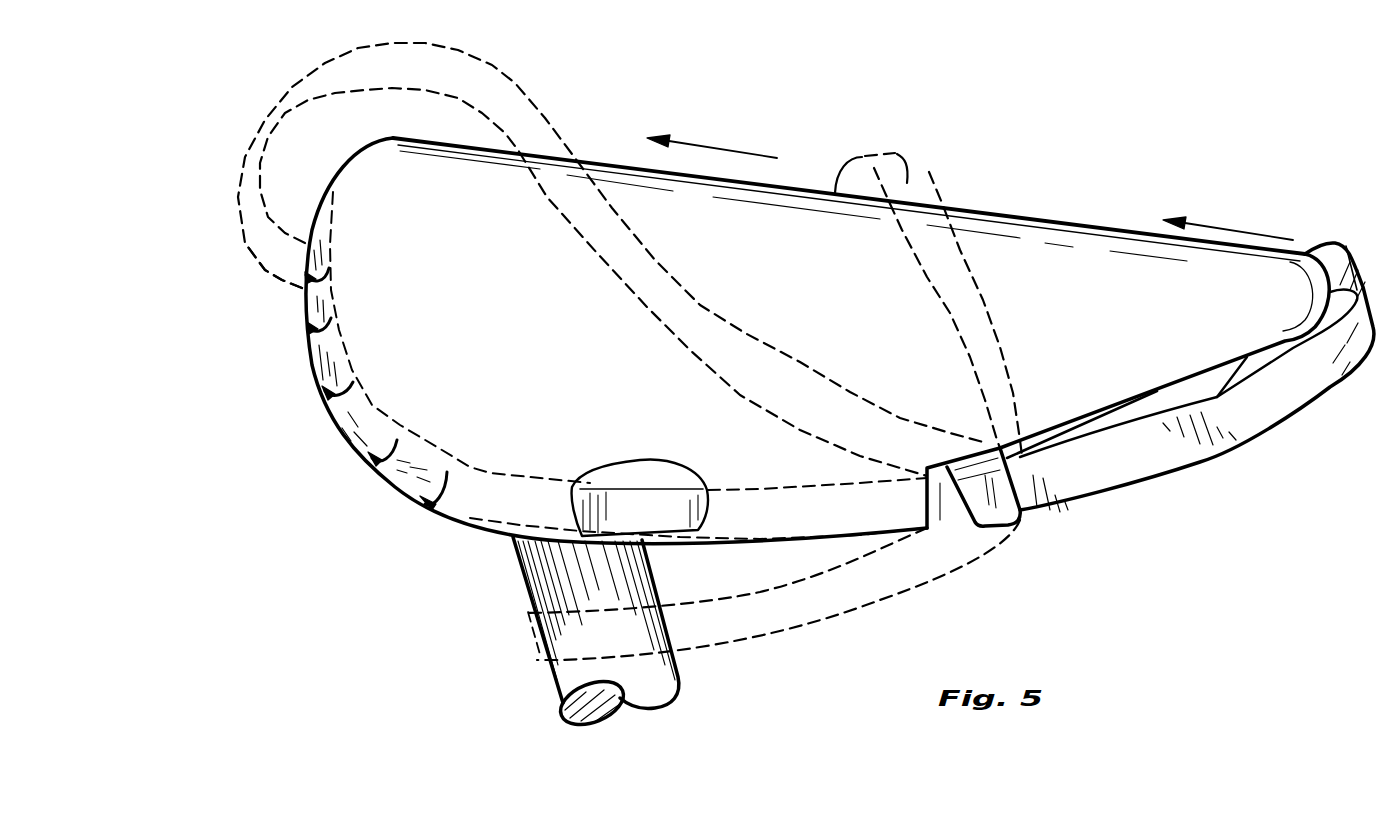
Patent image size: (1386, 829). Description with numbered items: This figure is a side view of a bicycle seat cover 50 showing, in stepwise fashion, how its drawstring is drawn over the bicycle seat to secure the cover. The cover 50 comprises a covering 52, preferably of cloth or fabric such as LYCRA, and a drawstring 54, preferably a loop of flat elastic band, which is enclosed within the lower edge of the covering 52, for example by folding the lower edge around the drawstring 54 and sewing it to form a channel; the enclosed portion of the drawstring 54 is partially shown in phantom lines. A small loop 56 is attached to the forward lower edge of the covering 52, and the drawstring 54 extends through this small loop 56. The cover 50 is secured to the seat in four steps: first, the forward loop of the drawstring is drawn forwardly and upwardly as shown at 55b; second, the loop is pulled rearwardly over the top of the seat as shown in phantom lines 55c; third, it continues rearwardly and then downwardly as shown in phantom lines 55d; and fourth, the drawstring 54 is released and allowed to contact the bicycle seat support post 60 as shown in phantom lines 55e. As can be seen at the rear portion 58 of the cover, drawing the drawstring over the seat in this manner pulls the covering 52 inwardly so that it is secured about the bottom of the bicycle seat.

The cover 50 is at (1008, 156).
The covering 52 is at (564, 379).
The drawstring 54 is at (457, 490).
The drawstring loop drawn forwardly and upwardly 55b is at (1147, 460).
The drawstring loop pulled rearwardly over the seat top 55c is at (935, 185).
The drawstring loop continuing rearwardly and downwardly 55d is at (507, 107).
The drawstring released against the seat support post 55e is at (887, 585).
The small loop 56 is at (1025, 514).
The rear portion of the cover 58 is at (260, 283).
The bicycle seat support post 60 is at (572, 677).